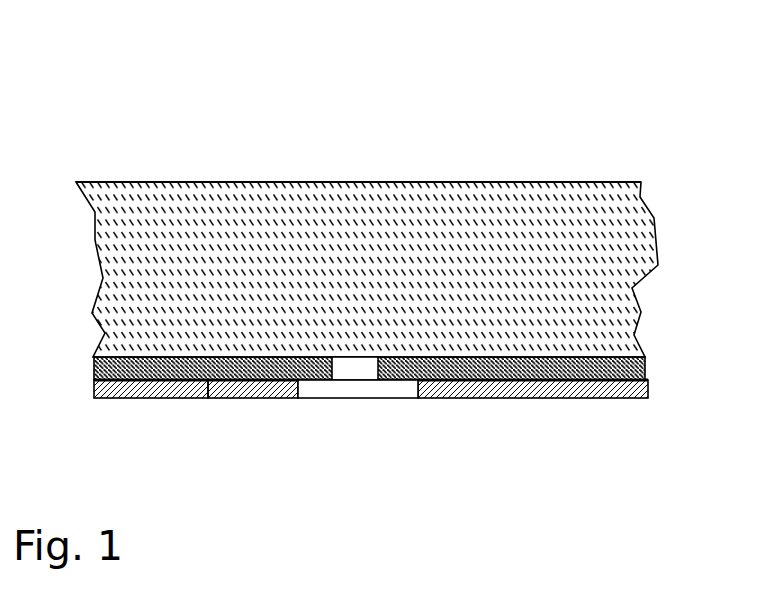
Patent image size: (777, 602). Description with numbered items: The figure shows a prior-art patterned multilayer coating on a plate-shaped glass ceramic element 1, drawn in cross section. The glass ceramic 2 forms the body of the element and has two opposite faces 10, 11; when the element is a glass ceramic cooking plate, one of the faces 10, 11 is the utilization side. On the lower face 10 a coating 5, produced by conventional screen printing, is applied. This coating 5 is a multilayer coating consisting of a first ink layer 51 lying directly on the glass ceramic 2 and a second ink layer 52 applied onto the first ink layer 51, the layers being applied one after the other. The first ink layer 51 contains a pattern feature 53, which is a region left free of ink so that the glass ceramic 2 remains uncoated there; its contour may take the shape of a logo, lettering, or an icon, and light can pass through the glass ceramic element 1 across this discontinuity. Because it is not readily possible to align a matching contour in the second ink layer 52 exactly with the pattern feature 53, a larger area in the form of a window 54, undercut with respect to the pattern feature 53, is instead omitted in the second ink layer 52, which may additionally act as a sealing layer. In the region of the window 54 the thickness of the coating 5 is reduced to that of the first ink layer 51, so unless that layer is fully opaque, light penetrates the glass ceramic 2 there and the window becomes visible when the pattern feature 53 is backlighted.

The glass ceramic element 1 is at (177, 165).
The glass ceramic 2 is at (267, 197).
The face 11 is at (353, 179).
The coating 5 is at (645, 357).
The face 10 is at (543, 360).
The first ink layer 51 is at (210, 398).
The second ink layer 52 is at (162, 398).
The pattern feature 53 is at (357, 372).
The window 54 is at (315, 393).